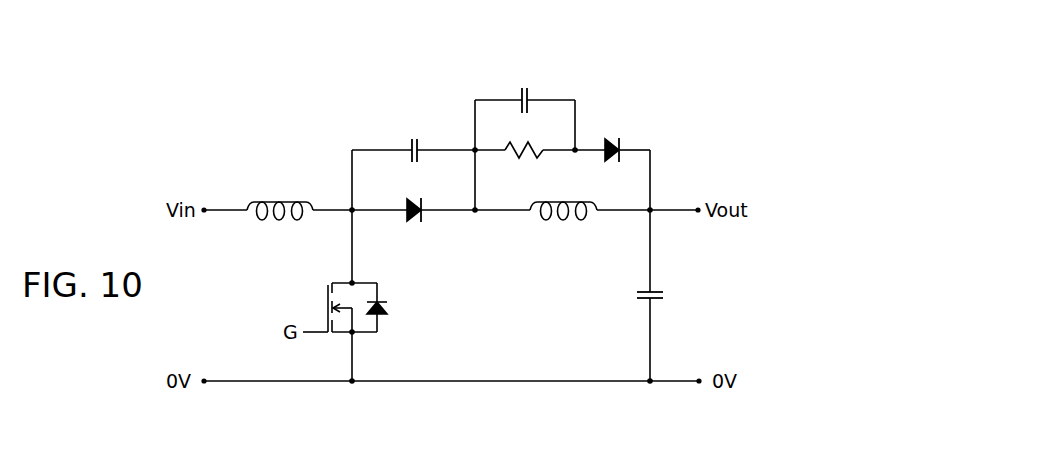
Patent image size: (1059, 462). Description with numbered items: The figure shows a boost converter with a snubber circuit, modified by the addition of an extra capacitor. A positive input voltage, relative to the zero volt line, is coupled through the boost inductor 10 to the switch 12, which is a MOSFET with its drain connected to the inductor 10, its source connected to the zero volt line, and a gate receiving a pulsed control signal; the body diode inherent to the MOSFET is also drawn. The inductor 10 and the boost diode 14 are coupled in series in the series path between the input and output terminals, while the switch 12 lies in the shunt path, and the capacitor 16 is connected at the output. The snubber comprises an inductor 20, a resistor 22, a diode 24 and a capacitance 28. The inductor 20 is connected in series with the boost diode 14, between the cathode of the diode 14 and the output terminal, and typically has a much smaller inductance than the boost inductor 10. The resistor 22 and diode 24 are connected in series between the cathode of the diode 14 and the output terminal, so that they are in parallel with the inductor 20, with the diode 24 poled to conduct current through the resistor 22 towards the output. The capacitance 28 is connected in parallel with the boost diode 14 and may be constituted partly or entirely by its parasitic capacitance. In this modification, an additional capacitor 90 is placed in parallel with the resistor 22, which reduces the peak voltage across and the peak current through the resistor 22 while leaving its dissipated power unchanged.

The inductor 10 is at (277, 222).
The switch 12 is at (315, 318).
The diode 14 is at (413, 224).
The capacitor 16 is at (634, 295).
The inductor 20 is at (561, 222).
The resistor 22 is at (522, 156).
The diode 24 is at (615, 134).
The capacitance 28 is at (413, 136).
The capacitor 90 is at (524, 112).